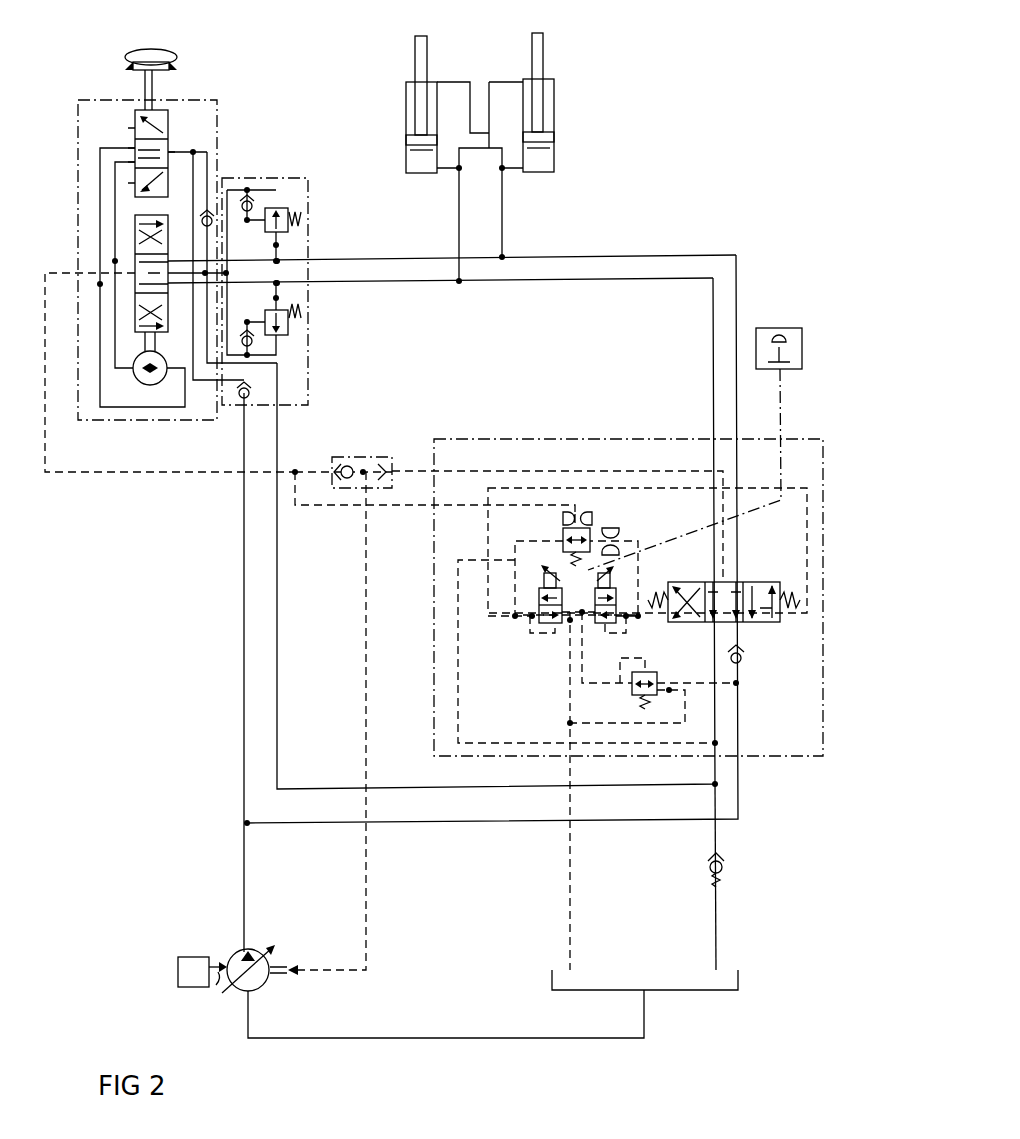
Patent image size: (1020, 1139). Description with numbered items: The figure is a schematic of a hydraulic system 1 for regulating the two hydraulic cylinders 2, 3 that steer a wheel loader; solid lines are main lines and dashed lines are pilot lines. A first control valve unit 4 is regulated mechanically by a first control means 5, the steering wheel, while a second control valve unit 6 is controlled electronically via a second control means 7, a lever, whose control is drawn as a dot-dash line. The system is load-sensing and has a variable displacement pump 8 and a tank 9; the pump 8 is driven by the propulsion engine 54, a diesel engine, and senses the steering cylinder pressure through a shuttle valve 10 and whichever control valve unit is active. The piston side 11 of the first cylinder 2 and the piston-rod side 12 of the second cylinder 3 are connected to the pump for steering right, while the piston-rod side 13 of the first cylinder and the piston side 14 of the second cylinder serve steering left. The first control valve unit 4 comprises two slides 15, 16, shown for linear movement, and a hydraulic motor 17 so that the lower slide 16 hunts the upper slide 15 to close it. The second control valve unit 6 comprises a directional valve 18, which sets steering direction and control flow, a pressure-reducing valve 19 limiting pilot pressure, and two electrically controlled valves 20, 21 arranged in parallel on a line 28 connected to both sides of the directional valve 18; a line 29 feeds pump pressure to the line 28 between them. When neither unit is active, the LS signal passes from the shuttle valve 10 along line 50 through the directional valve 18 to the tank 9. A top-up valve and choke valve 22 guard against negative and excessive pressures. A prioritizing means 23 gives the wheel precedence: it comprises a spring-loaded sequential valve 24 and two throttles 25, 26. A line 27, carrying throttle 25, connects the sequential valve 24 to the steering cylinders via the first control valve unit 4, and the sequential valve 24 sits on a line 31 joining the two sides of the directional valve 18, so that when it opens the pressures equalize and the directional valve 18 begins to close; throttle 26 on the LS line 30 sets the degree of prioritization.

The hydraulic system 1 is at (652, 159).
The first hydraulic cylinder 2 is at (406, 105).
The second hydraulic cylinder 3 is at (554, 103).
The first control valve unit 4 is at (78, 178).
The first control means 5 is at (110, 46).
The second control valve unit 6 is at (470, 440).
The second control means 7 is at (778, 328).
The variable displacement pump 8 is at (230, 1001).
The tank 9 is at (697, 990).
The shuttle valve 10 is at (350, 457).
The piston side of first hydraulic cylinder 11 is at (415, 157).
The piston-rod side of second hydraulic cylinder 12 is at (552, 88).
The piston-rod side of first hydraulic cylinder 13 is at (406, 88).
The piston side of second hydraulic cylinder 14 is at (545, 155).
The upper slide 15 is at (135, 125).
The lower slide 16 is at (135, 233).
The hydraulic motor 17 is at (140, 386).
The directional valve 18 is at (758, 623).
The pressure-reducing valve 19 is at (650, 664).
The left-hand electrically controlled valve 20 is at (540, 598).
The right-hand electrically controlled valve 21 is at (616, 592).
The top-up valve and choke valve 22 is at (245, 178).
The prioritizing means 23 is at (547, 480).
The sequential valve 24 is at (590, 530).
The throttle 25 is at (583, 515).
The throttle 26 is at (619, 528).
The line 27 is at (305, 507).
The line 28 is at (568, 685).
The line 29 is at (583, 668).
The line for LS signal 30 is at (128, 478).
The line 31 is at (535, 541).
The line 50 is at (405, 470).
The propulsion engine 54 is at (178, 970).